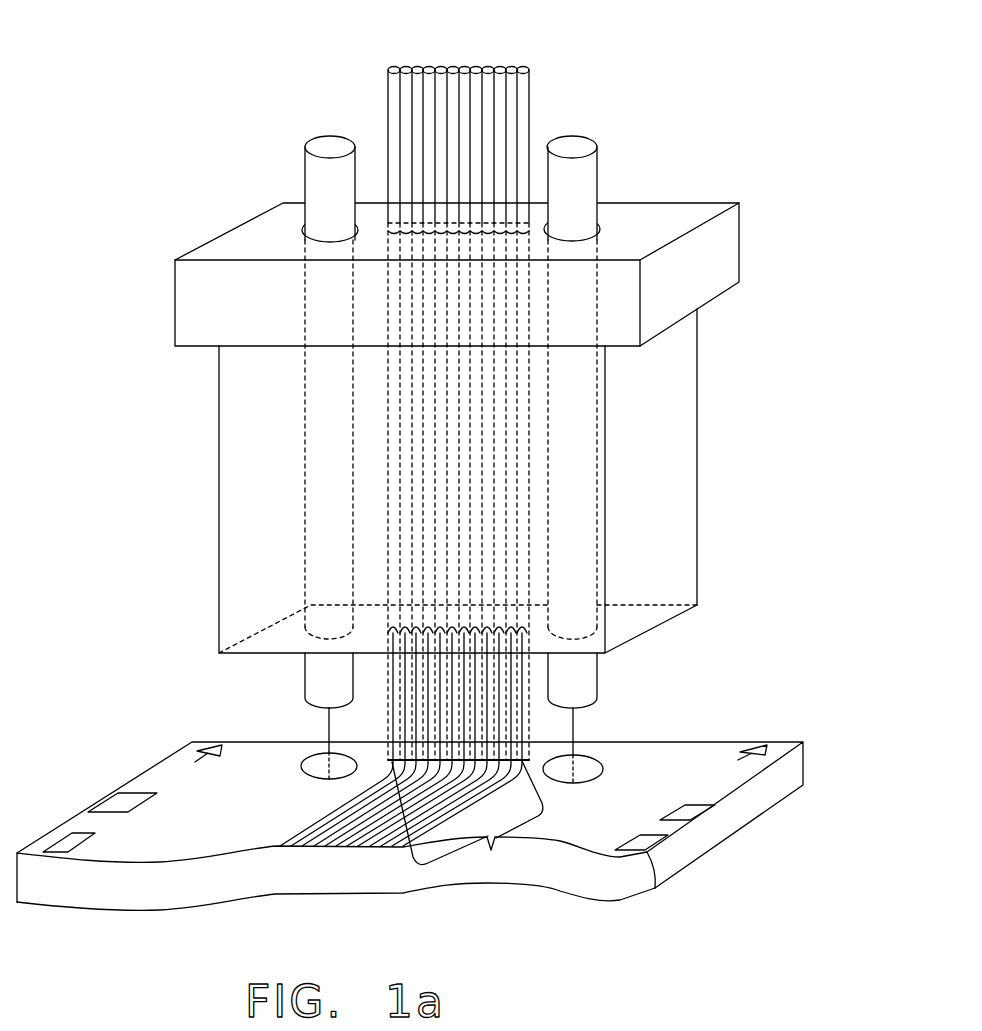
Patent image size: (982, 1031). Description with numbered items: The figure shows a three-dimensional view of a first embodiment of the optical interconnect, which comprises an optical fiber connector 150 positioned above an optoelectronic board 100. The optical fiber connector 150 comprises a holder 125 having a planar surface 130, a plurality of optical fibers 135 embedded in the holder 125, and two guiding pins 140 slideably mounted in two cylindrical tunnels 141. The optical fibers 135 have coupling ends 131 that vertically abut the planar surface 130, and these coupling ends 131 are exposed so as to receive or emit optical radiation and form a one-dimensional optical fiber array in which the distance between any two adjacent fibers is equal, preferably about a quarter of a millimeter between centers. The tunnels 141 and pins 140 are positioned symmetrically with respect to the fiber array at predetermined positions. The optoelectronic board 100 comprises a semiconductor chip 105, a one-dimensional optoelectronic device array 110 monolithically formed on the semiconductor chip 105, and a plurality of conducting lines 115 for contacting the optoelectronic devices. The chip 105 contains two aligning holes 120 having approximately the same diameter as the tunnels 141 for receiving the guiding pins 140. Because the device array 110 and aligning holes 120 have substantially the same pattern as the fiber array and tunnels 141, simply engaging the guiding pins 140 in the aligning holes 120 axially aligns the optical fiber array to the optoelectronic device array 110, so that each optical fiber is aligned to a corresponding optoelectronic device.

The optoelectronic board 100 is at (215, 718).
The semiconductor chip 105 is at (743, 810).
The one-dimensional optoelectronic device array 110 is at (411, 819).
The conducting lines 115 is at (403, 853).
The aligning holes 120 is at (302, 758).
The holder 125 is at (683, 218).
The planar surface 130 is at (655, 628).
The coupling ends 131 is at (413, 632).
The optical fibers 135 is at (388, 50).
The guiding pins 140 is at (325, 142).
The cylindrical tunnels 141 is at (302, 231).
The optical fiber connector 150 is at (740, 68).